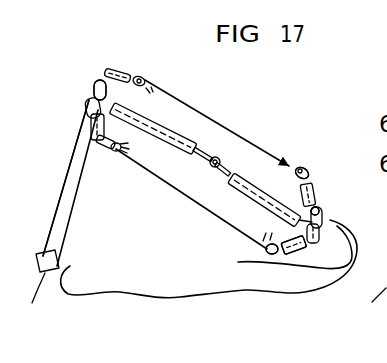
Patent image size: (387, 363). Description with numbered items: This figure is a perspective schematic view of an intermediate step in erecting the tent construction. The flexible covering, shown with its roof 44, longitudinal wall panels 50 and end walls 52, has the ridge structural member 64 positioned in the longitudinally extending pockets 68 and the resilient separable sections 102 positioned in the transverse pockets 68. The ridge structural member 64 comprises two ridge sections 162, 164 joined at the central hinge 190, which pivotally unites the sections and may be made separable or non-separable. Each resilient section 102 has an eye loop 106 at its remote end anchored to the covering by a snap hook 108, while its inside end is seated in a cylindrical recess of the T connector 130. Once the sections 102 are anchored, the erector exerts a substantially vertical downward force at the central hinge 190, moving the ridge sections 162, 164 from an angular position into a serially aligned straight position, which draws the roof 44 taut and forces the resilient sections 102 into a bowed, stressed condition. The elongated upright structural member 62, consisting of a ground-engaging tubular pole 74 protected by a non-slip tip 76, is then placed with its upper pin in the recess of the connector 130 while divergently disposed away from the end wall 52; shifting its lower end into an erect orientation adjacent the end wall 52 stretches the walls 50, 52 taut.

The roof 44 is at (249, 221).
The longitudinal wall panels 50 is at (173, 268).
The end walls 52 is at (74, 297).
The elongated upright structural member 62 is at (63, 169).
The ridge structural member 64 is at (218, 157).
The pockets or sleeves 68 is at (113, 67).
The ground-engaging tubular pole 74 is at (58, 203).
The tip 76 is at (209, 298).
The separable sections 102 is at (311, 178).
The eye loop 106 is at (277, 254).
The snap hook 108 is at (265, 249).
The connector 130 is at (91, 77).
The ridge section 162 is at (210, 143).
The ridge section 164 is at (232, 168).
The central hinge 190 is at (208, 171).